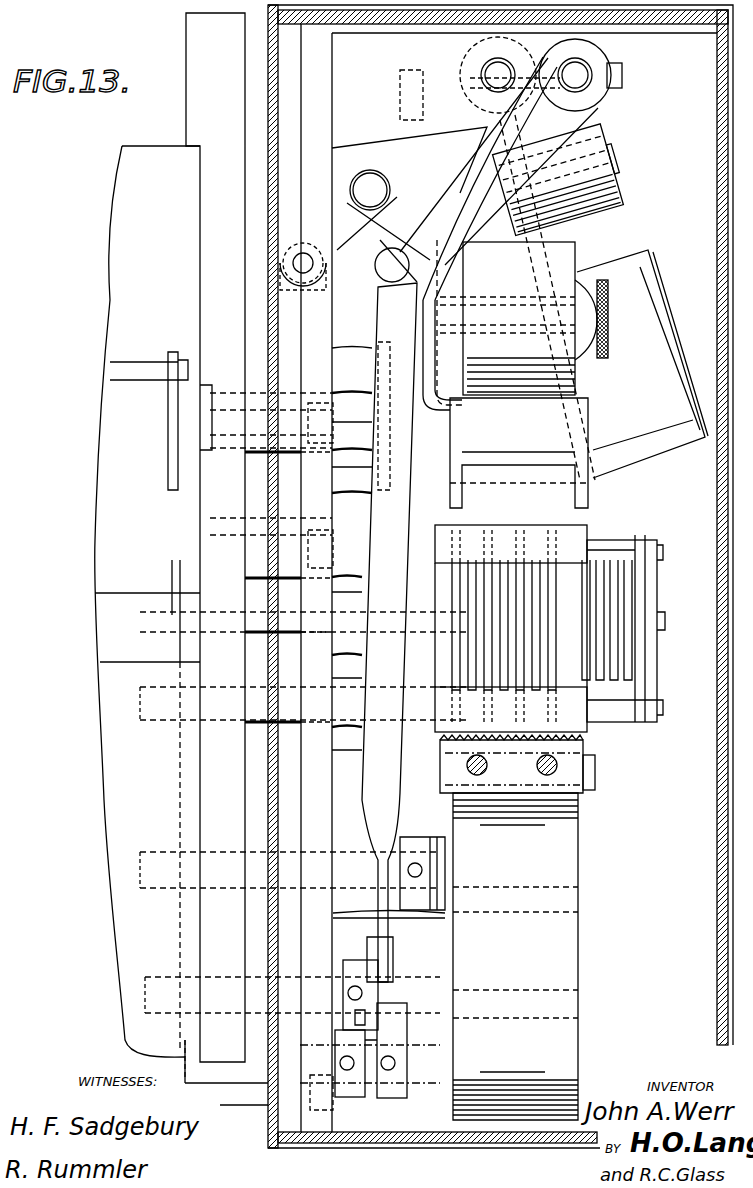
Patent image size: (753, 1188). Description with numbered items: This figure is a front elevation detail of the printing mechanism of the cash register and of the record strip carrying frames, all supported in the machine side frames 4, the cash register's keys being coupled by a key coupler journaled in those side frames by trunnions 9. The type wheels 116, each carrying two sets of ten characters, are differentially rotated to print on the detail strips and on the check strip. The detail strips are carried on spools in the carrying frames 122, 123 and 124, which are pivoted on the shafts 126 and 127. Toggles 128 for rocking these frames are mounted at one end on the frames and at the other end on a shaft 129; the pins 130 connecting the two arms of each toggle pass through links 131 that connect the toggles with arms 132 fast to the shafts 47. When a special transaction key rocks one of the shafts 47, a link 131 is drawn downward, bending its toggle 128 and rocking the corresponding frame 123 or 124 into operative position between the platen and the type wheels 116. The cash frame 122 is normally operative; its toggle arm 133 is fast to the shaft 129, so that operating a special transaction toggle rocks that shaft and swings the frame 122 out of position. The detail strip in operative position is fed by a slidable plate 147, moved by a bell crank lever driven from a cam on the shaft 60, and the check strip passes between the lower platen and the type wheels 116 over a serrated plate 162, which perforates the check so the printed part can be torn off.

The machine side frames 4 is at (198, 101).
The key coupler trunnions 9 is at (155, 855).
The shafts 47 is at (162, 980).
The shaft 60 is at (140, 703).
The type wheels 116 is at (498, 677).
The frame 122 is at (538, 152).
The frame 123 is at (600, 270).
The frame 124 is at (560, 887).
The shaft 126 is at (490, 67).
The shaft 127 is at (583, 70).
The toggles 128 is at (375, 172).
The shaft 129 is at (293, 265).
The pins 130 is at (378, 264).
The links 131 is at (395, 772).
The arms 132 is at (382, 1033).
The arm 133 is at (340, 213).
The slidable plate 147 is at (445, 418).
The serrated plate 162 is at (512, 795).